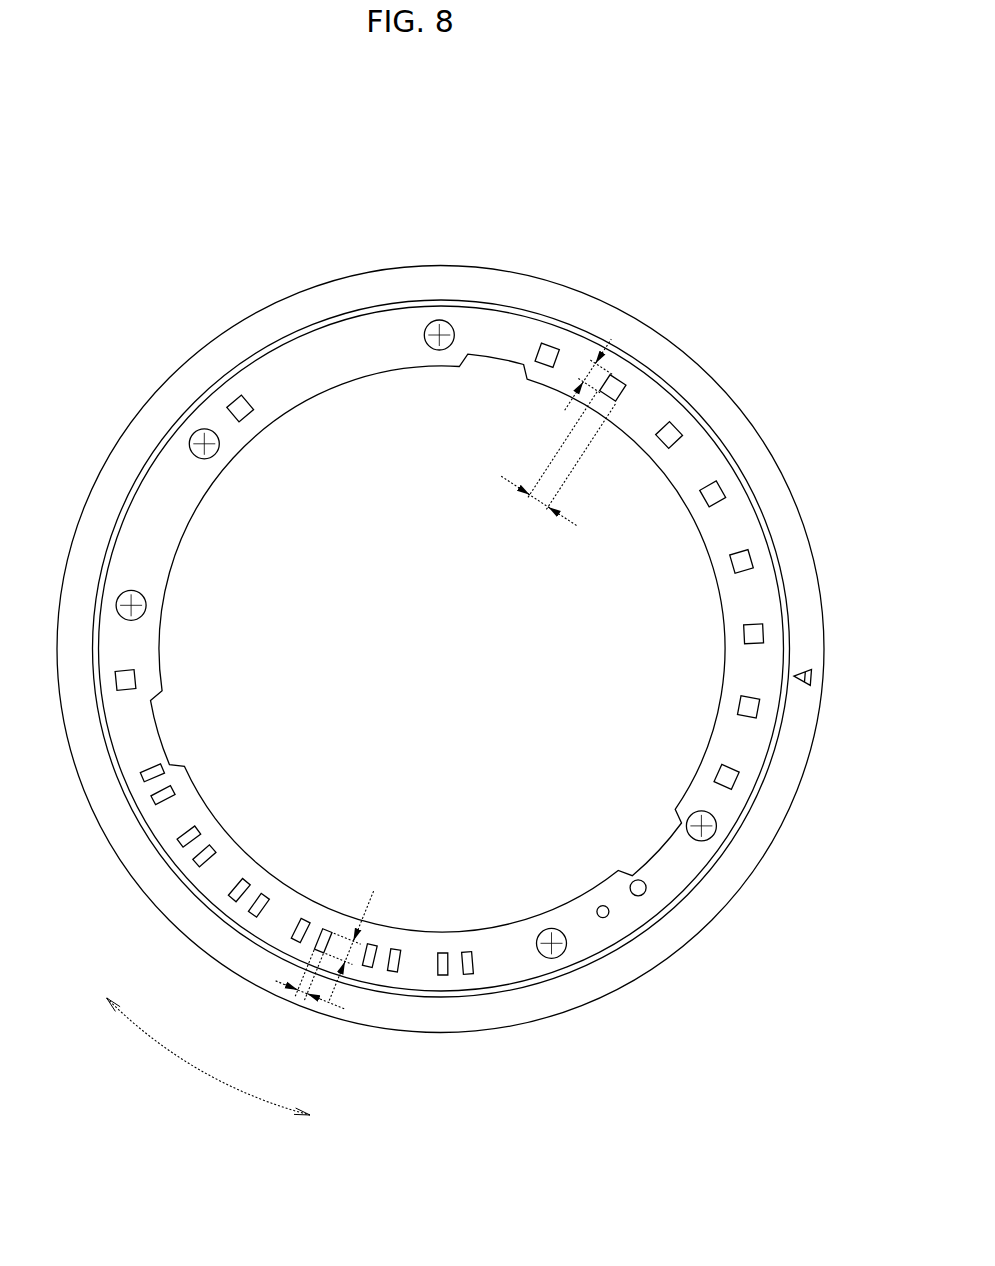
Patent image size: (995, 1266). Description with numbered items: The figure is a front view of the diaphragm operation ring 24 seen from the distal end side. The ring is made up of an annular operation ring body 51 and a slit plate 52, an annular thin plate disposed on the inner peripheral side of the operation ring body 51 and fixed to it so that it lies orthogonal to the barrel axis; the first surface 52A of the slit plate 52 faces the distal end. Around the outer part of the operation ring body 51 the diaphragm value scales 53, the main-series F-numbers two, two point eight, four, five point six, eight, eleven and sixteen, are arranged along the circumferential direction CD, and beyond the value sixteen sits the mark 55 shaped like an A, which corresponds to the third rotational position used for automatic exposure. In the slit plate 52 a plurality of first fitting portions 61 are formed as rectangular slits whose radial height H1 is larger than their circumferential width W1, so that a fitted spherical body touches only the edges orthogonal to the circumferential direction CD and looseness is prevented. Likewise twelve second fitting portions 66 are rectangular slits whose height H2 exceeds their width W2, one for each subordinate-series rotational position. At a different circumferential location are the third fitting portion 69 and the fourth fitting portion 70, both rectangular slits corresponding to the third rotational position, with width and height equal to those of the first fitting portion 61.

The diaphragm operation ring 24 is at (137, 280).
The operation ring body 51 is at (191, 356).
The slit plate 52 is at (359, 347).
The first surface 52A is at (382, 333).
The diaphragm value scales 53 is at (518, 272).
The mark 55 is at (806, 690).
The first fitting portions 61 is at (557, 346).
The second fitting portions 66 is at (172, 790).
The third fitting portion 69 is at (716, 780).
The fourth fitting portion 70 is at (138, 674).
The height of the first fitting portion H1 is at (571, 382).
The width of the first fitting portion W1 is at (557, 459).
The height of the second fitting portion H2 is at (350, 937).
The width of the second fitting portion W2 is at (286, 979).
The circumferential direction CD is at (208, 1056).